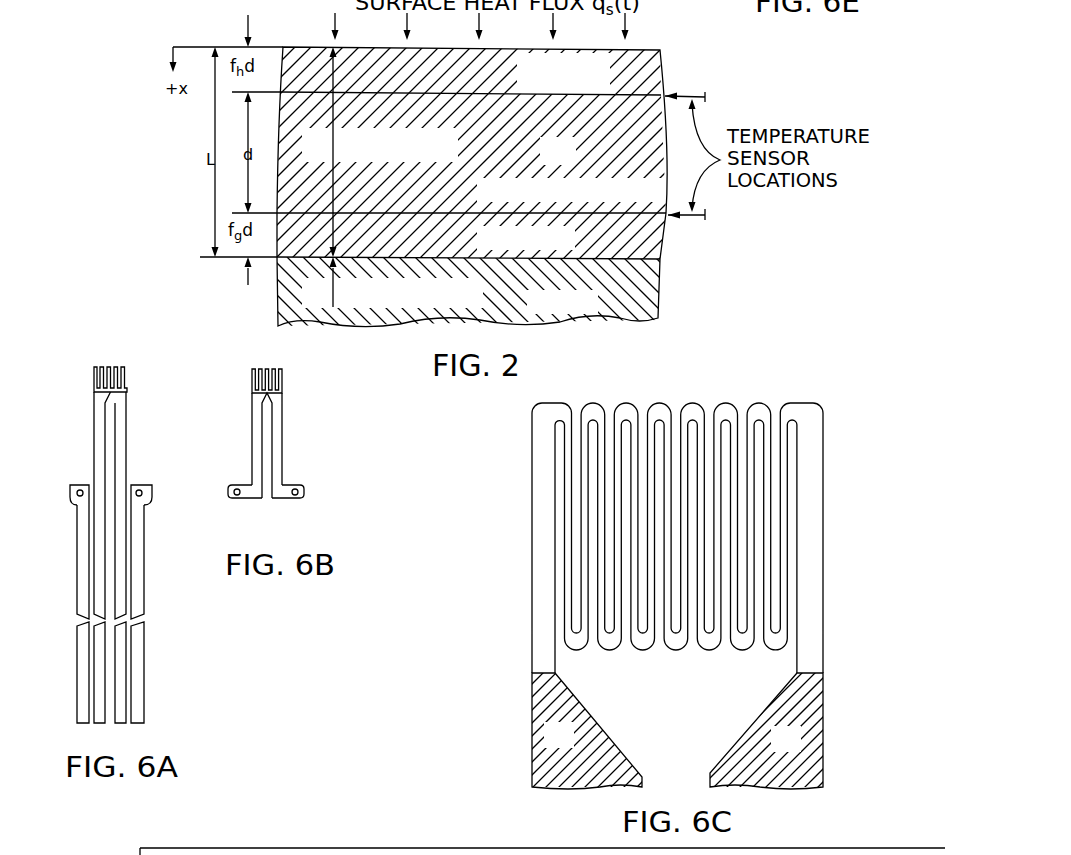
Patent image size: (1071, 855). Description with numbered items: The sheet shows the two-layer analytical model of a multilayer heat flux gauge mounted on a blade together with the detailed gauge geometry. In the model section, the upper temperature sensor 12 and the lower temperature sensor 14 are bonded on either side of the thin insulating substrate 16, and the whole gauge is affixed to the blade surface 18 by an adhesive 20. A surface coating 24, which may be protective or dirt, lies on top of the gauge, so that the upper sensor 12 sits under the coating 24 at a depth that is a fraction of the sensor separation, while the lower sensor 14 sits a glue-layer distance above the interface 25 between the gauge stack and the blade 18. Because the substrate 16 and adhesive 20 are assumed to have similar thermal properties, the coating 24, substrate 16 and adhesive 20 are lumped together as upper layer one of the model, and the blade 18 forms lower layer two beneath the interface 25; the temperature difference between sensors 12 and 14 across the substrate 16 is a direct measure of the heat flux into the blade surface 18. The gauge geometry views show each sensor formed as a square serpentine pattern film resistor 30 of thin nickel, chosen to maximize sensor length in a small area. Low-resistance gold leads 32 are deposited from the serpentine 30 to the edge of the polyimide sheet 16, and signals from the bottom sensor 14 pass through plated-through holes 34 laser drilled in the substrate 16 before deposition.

In FIG. 2, the upper temperature sensor 12 is at (564, 97).
In FIG. 6A, the upper temperature sensor 12 is at (128, 382).
In FIG. 6C, the upper temperature sensor 12 is at (826, 516).
In FIG. 2, the lower temperature sensor 14 is at (563, 216).
In FIG. 6B, the lower temperature sensor 14 is at (282, 381).
In FIG. 2, the insulating substrate 16 is at (572, 163).
In FIG. 2, the blade surface 18 is at (640, 292).
In FIG. 2, the adhesive 20 is at (647, 235).
In FIG. 2, the surface coating 24 is at (630, 58).
In FIG. 2, the interface 25 is at (657, 263).
In FIG. 6A, the serpentine pattern film resistor 30 is at (106, 367).
In FIG. 6B, the serpentine pattern film resistor 30 is at (268, 366).
In FIG. 6C, the serpentine pattern film resistor 30 is at (725, 410).
In FIG. 6A, the gold leads 32 is at (98, 458).
In FIG. 6B, the gold leads 32 is at (252, 458).
In FIG. 6C, the gold leads 32 is at (805, 718).
In FIG. 6A, the plated through holes 34 is at (77, 492).
In FIG. 6B, the plated through holes 34 is at (298, 493).